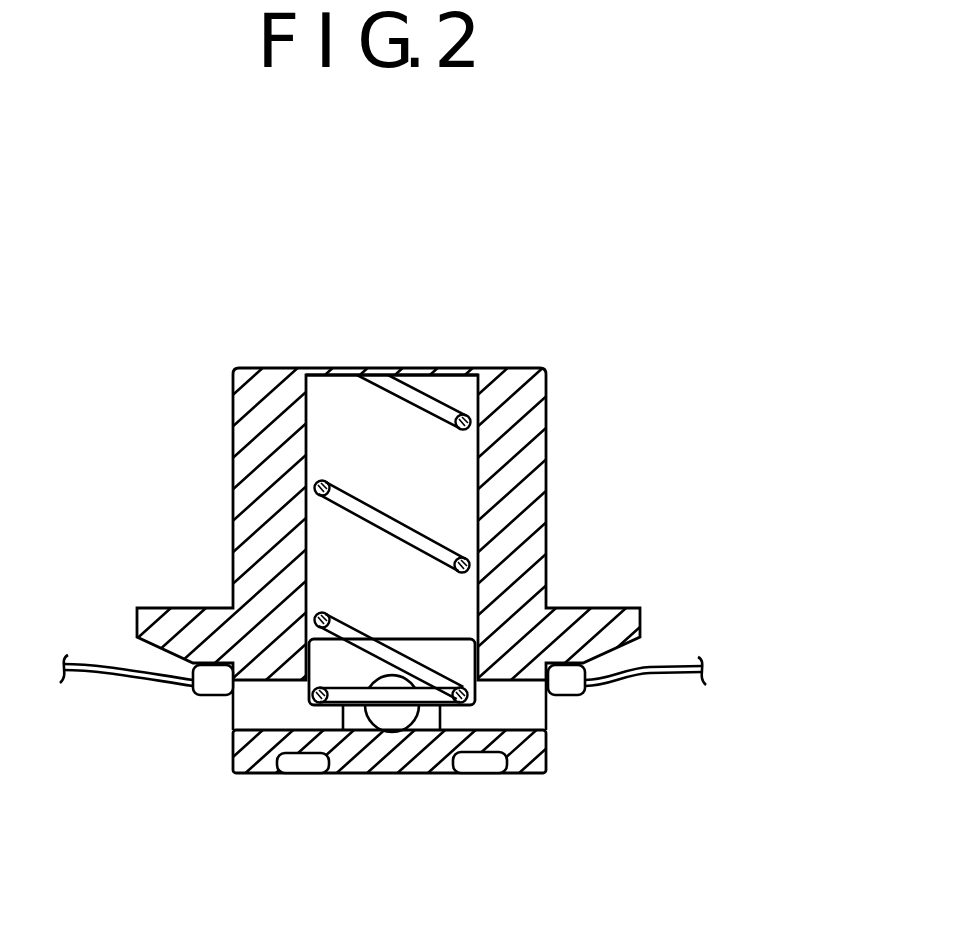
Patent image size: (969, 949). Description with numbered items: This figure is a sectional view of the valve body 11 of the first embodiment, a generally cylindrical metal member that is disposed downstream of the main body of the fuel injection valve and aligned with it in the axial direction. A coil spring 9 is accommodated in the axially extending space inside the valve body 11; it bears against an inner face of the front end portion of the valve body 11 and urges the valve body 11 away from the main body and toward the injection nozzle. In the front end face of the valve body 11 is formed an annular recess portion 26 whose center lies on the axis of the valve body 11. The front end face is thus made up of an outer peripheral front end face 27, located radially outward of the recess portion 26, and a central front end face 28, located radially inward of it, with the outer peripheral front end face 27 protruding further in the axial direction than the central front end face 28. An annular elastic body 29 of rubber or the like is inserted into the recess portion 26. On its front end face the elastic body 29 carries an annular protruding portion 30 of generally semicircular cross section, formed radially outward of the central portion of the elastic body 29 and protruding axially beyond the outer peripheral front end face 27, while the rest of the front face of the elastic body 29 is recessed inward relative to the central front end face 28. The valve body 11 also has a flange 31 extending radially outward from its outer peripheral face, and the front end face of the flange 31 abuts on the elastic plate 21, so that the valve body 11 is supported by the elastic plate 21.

The coil spring 9 is at (420, 398).
The valve body 11 is at (545, 273).
The elastic plate 21 is at (622, 685).
The annular recess portion 26 is at (463, 773).
The outer peripheral front end face 27 is at (528, 773).
The central front end face 28 is at (395, 773).
The annular elastic body 29 is at (282, 773).
The annular protruding portion 30 is at (290, 773).
The flange 31 is at (610, 607).